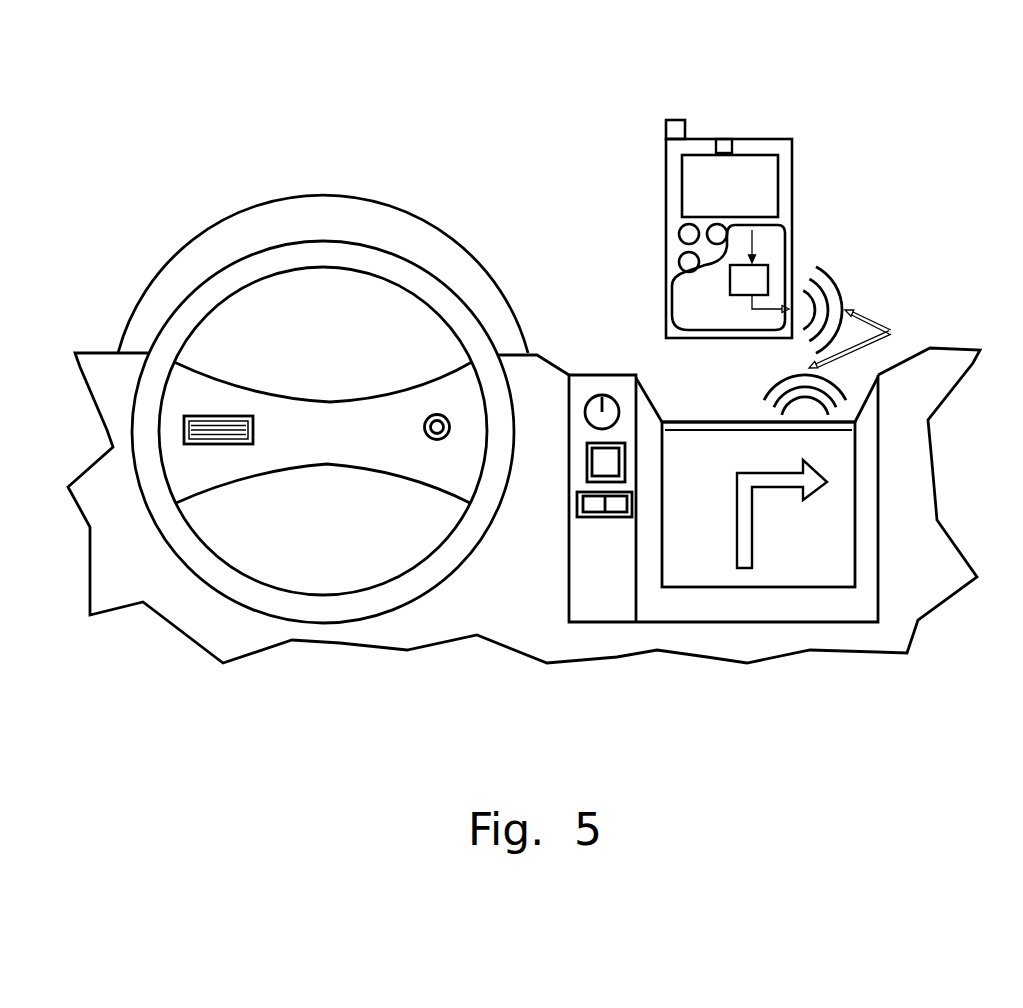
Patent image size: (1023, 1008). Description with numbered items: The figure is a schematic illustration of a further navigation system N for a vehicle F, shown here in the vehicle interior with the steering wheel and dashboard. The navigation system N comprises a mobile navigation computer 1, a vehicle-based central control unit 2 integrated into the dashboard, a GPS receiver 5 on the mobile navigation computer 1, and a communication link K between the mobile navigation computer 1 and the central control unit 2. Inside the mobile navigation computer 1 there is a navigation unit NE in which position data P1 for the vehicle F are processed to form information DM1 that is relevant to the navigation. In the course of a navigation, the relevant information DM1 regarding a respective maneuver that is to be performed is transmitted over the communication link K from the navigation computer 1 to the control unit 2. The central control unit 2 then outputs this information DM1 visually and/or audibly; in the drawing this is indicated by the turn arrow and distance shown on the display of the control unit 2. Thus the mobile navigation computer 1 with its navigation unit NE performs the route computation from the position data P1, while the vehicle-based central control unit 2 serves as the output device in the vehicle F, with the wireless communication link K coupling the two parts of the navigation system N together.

The vehicle F is at (163, 153).
The navigation system N is at (601, 207).
The mobile navigation computer 1 is at (793, 167).
The GPS receiver 5 is at (723, 141).
The navigation unit NE is at (752, 282).
The position data P1 is at (752, 240).
The information relevant to the navigation DM1 is at (750, 298).
The communication link K is at (890, 317).
The vehicle-based central control unit 2 is at (670, 608).